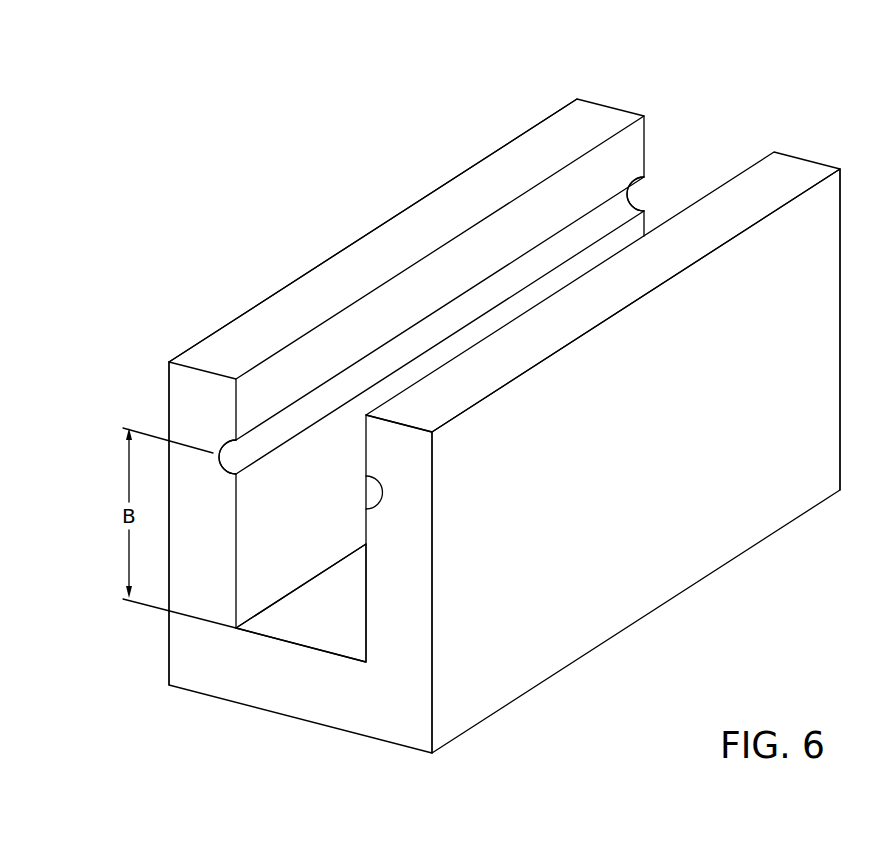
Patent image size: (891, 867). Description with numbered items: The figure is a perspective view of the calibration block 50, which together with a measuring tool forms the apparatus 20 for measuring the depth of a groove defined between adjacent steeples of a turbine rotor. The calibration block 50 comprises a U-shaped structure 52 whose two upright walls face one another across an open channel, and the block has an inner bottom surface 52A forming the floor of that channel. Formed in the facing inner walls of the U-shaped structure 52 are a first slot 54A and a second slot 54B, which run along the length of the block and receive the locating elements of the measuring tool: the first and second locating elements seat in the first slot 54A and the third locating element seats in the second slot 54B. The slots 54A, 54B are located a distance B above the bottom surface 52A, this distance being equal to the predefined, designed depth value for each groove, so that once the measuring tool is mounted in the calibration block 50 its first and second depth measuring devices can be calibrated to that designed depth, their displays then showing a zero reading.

The apparatus 20 is at (480, 108).
The calibration block 50 is at (713, 135).
The U-shaped structure 52 is at (800, 245).
The inner bottom surface 52A is at (293, 631).
The first slot 54A is at (372, 509).
The second slot 54B is at (275, 431).